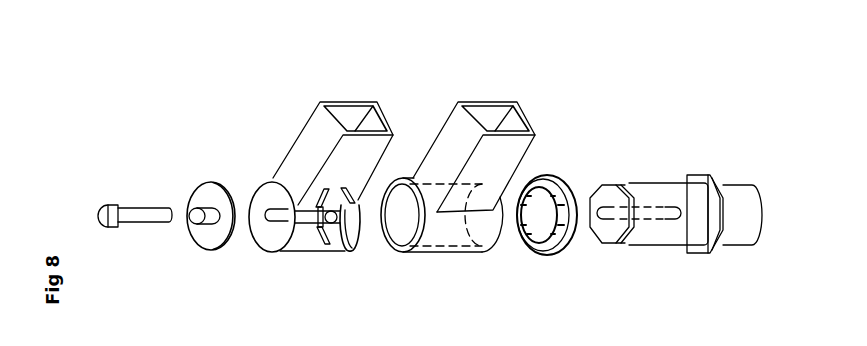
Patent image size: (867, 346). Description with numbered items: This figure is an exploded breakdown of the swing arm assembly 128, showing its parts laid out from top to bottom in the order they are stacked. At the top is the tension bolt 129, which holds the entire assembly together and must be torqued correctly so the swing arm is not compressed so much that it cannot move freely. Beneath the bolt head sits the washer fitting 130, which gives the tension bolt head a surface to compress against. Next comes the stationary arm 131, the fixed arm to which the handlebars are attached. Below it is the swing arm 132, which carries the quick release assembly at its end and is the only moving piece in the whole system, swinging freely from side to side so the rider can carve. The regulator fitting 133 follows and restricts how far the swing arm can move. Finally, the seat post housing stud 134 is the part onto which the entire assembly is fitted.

The swing arm assembly 128 is at (451, 163).
The tension bolt 129 is at (135, 201).
The washer fitting 130 is at (211, 198).
The stationary arm 131 is at (321, 162).
The swing arm assembly 132 is at (458, 162).
The regulator fitting 133 is at (547, 200).
The seat post housing stud 134 is at (676, 202).